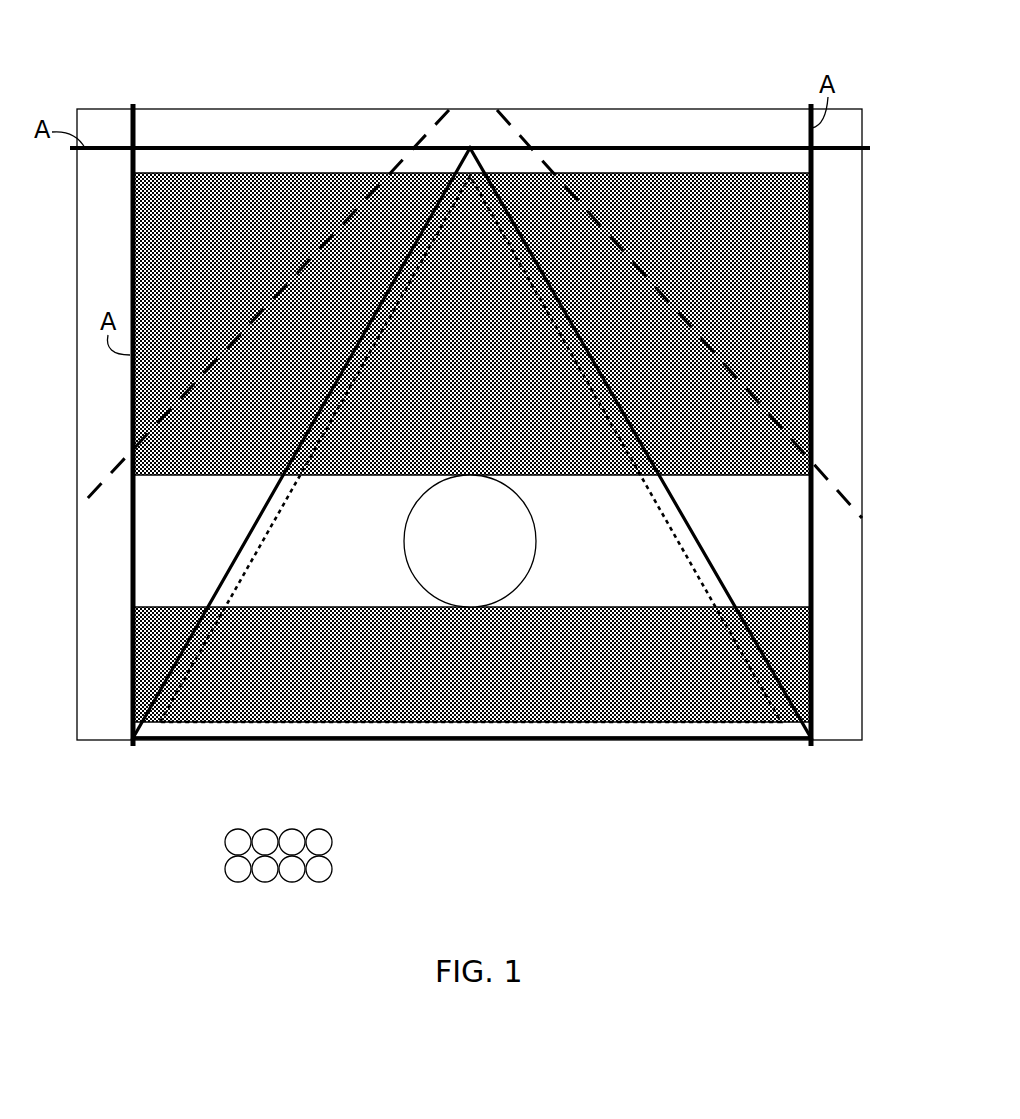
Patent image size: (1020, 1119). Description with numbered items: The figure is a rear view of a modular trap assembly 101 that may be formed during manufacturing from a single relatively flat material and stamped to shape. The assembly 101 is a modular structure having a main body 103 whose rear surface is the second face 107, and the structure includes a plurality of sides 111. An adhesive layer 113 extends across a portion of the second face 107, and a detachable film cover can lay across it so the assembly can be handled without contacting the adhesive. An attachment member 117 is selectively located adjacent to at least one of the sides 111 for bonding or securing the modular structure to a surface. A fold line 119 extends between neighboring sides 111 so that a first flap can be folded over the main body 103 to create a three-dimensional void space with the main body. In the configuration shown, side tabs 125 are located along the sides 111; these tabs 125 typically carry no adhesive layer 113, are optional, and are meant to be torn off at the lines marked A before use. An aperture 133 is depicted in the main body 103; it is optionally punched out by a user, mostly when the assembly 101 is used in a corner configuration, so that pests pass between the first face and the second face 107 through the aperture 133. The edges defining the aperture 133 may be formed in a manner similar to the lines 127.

The modular trap assembly 101 is at (636, 62).
The main body 103 is at (405, 744).
The second face 107 is at (381, 576).
The sides 111 is at (172, 145).
The adhesive layer 113 is at (368, 478).
The attachment member 117 is at (240, 878).
The fold line 119 is at (295, 450).
The side tabs 125 is at (255, 125).
The lines 127 is at (295, 270).
The aperture 133 is at (405, 558).